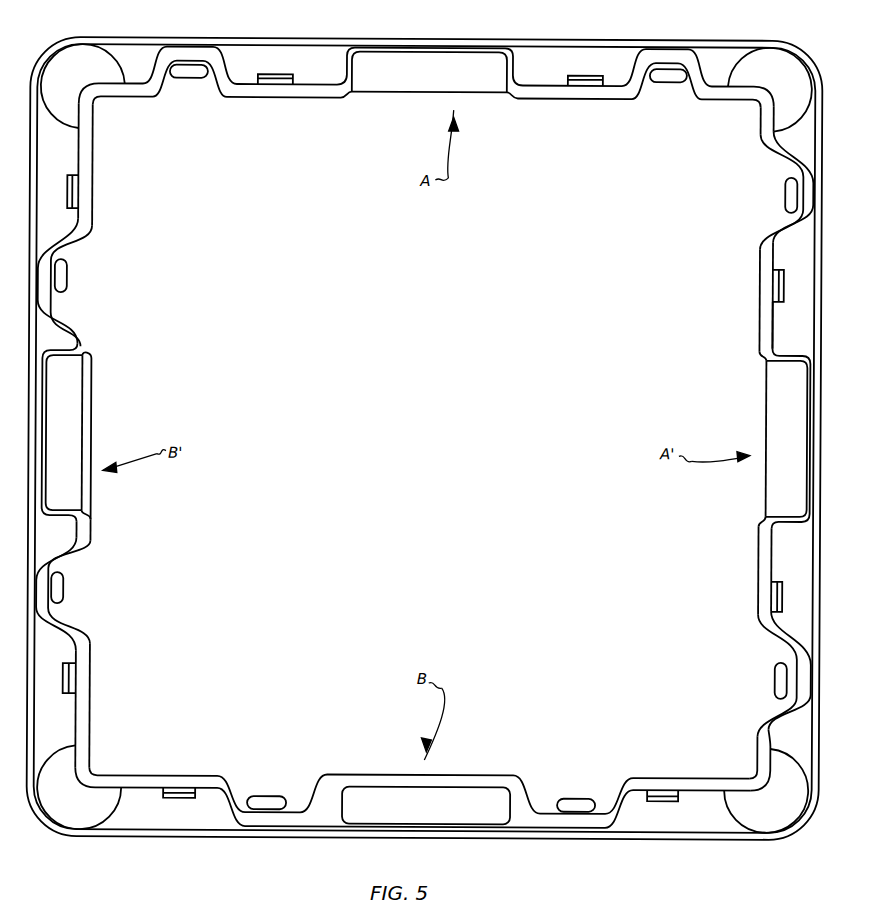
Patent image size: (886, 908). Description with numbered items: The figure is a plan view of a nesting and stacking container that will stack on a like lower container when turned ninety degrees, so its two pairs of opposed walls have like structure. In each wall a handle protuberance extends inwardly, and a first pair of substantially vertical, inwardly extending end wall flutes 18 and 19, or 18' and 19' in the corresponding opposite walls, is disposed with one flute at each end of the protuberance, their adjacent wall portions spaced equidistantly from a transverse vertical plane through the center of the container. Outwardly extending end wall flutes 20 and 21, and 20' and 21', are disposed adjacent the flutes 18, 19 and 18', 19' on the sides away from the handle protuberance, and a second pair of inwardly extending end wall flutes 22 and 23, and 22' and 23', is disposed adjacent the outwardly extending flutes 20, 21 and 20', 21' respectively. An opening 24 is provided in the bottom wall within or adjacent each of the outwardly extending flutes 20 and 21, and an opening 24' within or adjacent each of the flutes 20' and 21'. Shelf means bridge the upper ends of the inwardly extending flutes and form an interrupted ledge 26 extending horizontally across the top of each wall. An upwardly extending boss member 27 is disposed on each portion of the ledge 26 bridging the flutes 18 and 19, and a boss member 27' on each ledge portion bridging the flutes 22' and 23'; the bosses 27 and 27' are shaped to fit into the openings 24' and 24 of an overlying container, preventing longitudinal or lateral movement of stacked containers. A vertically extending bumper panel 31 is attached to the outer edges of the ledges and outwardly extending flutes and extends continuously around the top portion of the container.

The inwardly extending end wall flute 18 is at (769, 411).
The inwardly extending end wall flute 18' is at (82, 409).
The inwardly extending end wall flute 19 is at (766, 564).
The inwardly extending end wall flute 19' is at (85, 523).
The outwardly extending end wall flute 20 is at (772, 191).
The outwardly extending end wall flute 20' is at (72, 282).
The outwardly extending end wall flute 21 is at (773, 674).
The outwardly extending end wall flute 21' is at (75, 593).
The inwardly extending end wall flute 22 is at (747, 140).
The inwardly extending end wall flute 22' is at (105, 164).
The inwardly extending end wall flute 23 is at (744, 752).
The inwardly extending end wall flute 23' is at (100, 705).
The opening 24 is at (767, 201).
The opening 24' is at (84, 275).
The interrupted ledge 26 is at (783, 330).
The boss member 27 is at (751, 297).
The boss member 27' is at (100, 189).
The bumper panel 31 is at (36, 669).